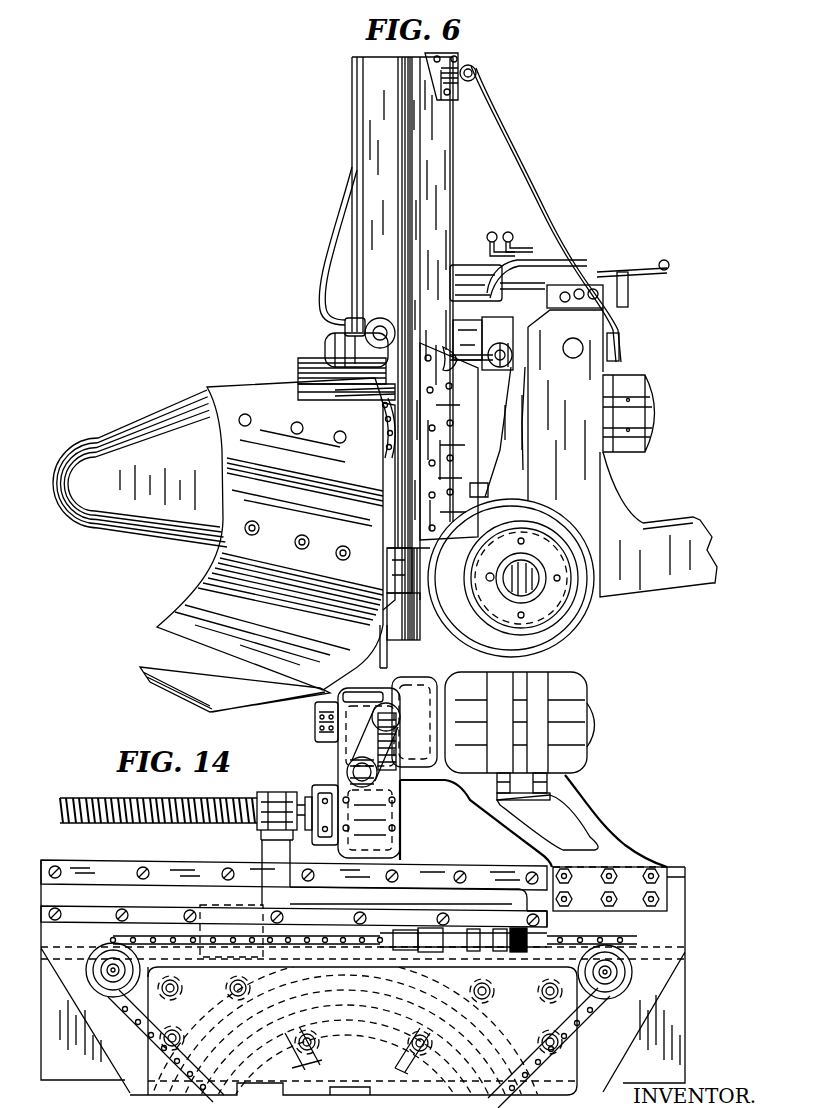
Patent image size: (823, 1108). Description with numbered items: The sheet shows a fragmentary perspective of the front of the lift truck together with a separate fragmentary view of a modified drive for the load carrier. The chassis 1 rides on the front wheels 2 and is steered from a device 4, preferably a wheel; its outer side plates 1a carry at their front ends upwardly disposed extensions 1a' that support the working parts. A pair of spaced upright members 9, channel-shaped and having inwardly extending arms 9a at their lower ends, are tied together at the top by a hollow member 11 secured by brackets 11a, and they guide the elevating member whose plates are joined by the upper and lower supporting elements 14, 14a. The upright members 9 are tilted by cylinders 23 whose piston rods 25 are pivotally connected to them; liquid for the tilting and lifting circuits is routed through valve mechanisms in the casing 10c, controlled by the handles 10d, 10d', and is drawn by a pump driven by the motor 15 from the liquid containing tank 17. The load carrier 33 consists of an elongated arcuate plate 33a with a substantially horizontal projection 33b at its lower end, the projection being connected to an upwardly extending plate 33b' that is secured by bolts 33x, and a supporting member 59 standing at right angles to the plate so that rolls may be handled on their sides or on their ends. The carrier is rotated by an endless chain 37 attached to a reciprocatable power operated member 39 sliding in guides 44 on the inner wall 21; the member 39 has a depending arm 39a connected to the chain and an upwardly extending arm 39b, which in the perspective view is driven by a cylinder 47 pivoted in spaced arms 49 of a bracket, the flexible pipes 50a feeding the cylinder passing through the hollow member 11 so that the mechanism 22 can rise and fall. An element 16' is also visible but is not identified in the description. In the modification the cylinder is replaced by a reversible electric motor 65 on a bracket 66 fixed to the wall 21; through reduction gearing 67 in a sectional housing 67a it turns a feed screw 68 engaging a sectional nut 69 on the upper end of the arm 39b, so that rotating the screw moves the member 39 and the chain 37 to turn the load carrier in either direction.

In FIG. 6, the chassis 1 is at (733, 552).
In FIG. 6, the outer side plates 1a is at (680, 536).
In FIG. 6, the upwardly disposed extensions 1a' is at (628, 436).
In FIG. 6, the front wheels 2 is at (570, 630).
In FIG. 6, the steering device 4 is at (650, 276).
In FIG. 6, the upright members 9 is at (352, 130).
In FIG. 6, the inwardly extending arms 9a is at (500, 493).
In FIG. 6, the casing 10c is at (572, 302).
In FIG. 6, the operating handle 10d is at (495, 232).
In FIG. 6, the handle 10d' is at (520, 230).
In FIG. 6, the hollow member 11 is at (470, 66).
In FIG. 6, the brackets 11a is at (463, 100).
In FIG. 6, the upper supporting element 14 is at (417, 443).
In FIG. 14, the upper supporting element 14 is at (67, 1080).
In FIG. 6, the lower supporting element 14a is at (387, 570).
In FIG. 6, the motor 15 is at (648, 408).
In FIG. 6, the frame member 16' is at (540, 422).
In FIG. 6, the liquid containing tank 17 is at (450, 290).
In FIG. 6, the inner wall 21 is at (378, 500).
In FIG. 14, the inner wall 21 is at (681, 905).
In FIG. 6, the mechanism 22 is at (282, 387).
In FIG. 6, the cylinders 23 is at (532, 372).
In FIG. 6, the piston rod 25 is at (455, 372).
In FIG. 6, the load carrier 33 is at (316, 675).
In FIG. 6, the elongated plate 33a is at (178, 613).
In FIG. 6, the horizontal projection 33b is at (235, 693).
In FIG. 6, the upwardly extending plate 33b' is at (401, 646).
In FIG. 6, the bolts 33x is at (259, 526).
In FIG. 6, the endless chain 37 is at (378, 440).
In FIG. 14, the endless chain 37 is at (361, 1022).
In FIG. 6, the power operated member 39 is at (345, 398).
In FIG. 14, the power operated member 39 is at (477, 872).
In FIG. 14, the arm 39a is at (515, 960).
In FIG. 14, the upwardly extending arm 39b is at (262, 845).
In FIG. 14, the guides 44 is at (56, 877).
In FIG. 6, the cylinder 47 is at (328, 338).
In FIG. 6, the spaced arms 49 is at (375, 339).
In FIG. 6, the flexible pipe 50a is at (517, 192).
In FIG. 6, the supporting member 59 is at (173, 513).
In FIG. 14, the reversible electric motor 65 is at (580, 697).
In FIG. 14, the bracket 66 is at (577, 807).
In FIG. 14, the reduction gearing 67 is at (337, 748).
In FIG. 14, the sectional housing 67a is at (400, 847).
In FIG. 14, the feed screw 68 is at (100, 826).
In FIG. 14, the nut 69 is at (262, 792).